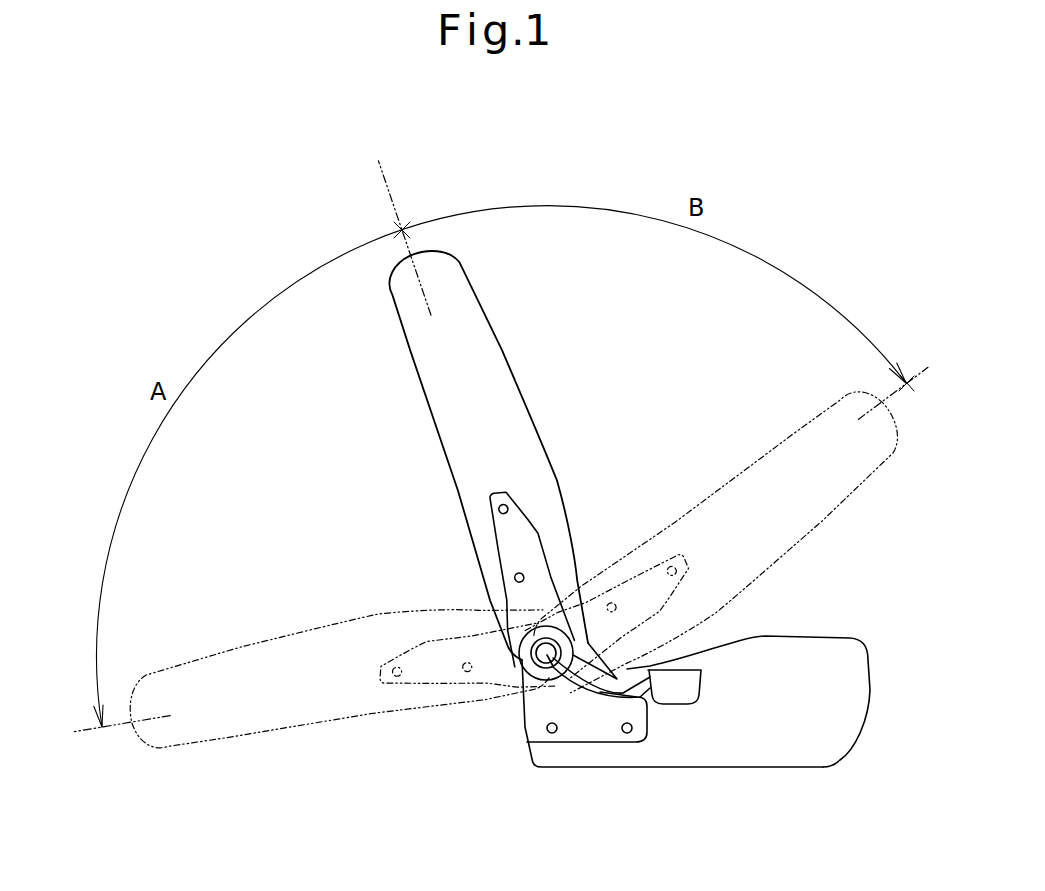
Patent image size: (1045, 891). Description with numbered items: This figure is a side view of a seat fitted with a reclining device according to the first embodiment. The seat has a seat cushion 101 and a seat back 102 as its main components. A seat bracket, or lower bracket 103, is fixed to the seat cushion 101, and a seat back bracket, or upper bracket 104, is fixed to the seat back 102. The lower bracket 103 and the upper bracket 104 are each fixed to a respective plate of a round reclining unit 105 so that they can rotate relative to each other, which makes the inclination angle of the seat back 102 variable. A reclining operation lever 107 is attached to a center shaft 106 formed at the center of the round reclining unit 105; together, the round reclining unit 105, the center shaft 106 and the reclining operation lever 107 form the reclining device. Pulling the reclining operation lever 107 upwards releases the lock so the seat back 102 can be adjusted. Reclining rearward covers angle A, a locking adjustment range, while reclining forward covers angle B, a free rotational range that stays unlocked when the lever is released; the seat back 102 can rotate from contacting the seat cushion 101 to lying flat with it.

The seat cushion 101 is at (802, 752).
The seat back 102 is at (435, 383).
The seat bracket (lower bracket) 103 is at (600, 728).
The seat back bracket (upper bracket) 104 is at (513, 538).
The round reclining unit 105 is at (530, 678).
The center shaft 106 is at (555, 667).
The reclining operation lever 107 is at (675, 688).